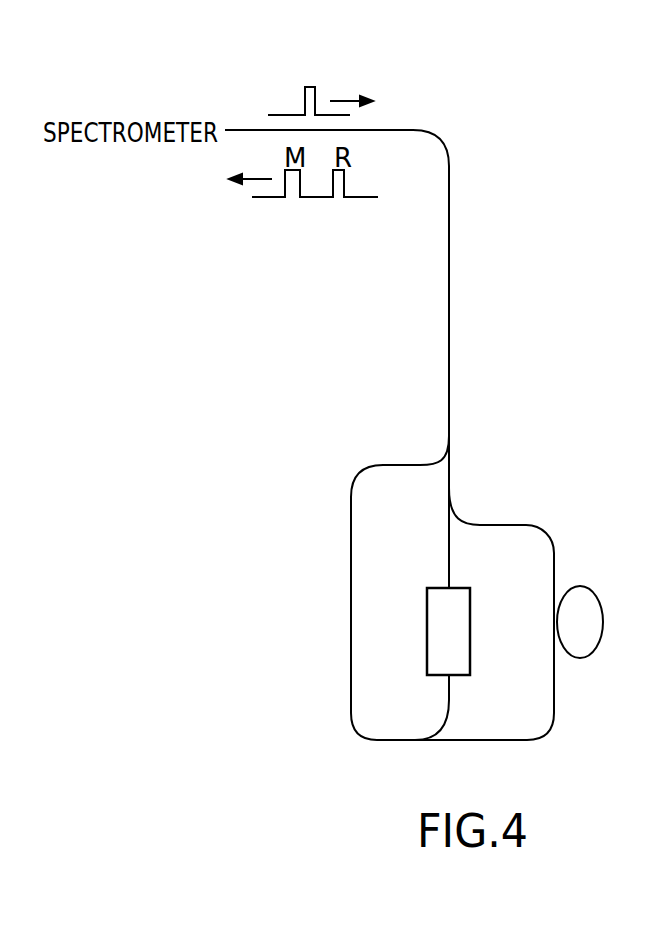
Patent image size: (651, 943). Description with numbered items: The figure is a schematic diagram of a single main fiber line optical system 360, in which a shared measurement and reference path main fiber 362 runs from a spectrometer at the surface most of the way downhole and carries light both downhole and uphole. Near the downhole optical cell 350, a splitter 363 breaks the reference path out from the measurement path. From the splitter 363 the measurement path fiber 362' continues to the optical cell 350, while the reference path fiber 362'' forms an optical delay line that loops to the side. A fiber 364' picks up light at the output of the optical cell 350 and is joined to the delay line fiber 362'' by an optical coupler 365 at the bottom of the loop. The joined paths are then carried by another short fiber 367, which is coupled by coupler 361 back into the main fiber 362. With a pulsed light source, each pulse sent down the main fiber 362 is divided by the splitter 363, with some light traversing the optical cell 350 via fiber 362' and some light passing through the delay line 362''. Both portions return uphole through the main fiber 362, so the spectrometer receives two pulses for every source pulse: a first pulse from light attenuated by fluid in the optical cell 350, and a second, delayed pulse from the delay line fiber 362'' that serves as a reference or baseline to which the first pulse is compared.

The main fiber line optical system 360 is at (280, 393).
The coupler 361 is at (449, 438).
The main fiber 362 is at (368, 359).
The measurement path fiber 362' is at (368, 540).
The reference path fiber 362'' is at (573, 615).
The splitter 363 is at (450, 493).
The optical cell 350 is at (427, 608).
The fiber 364' is at (466, 731).
The optical coupler 365 is at (400, 741).
The short fiber 367 is at (351, 560).